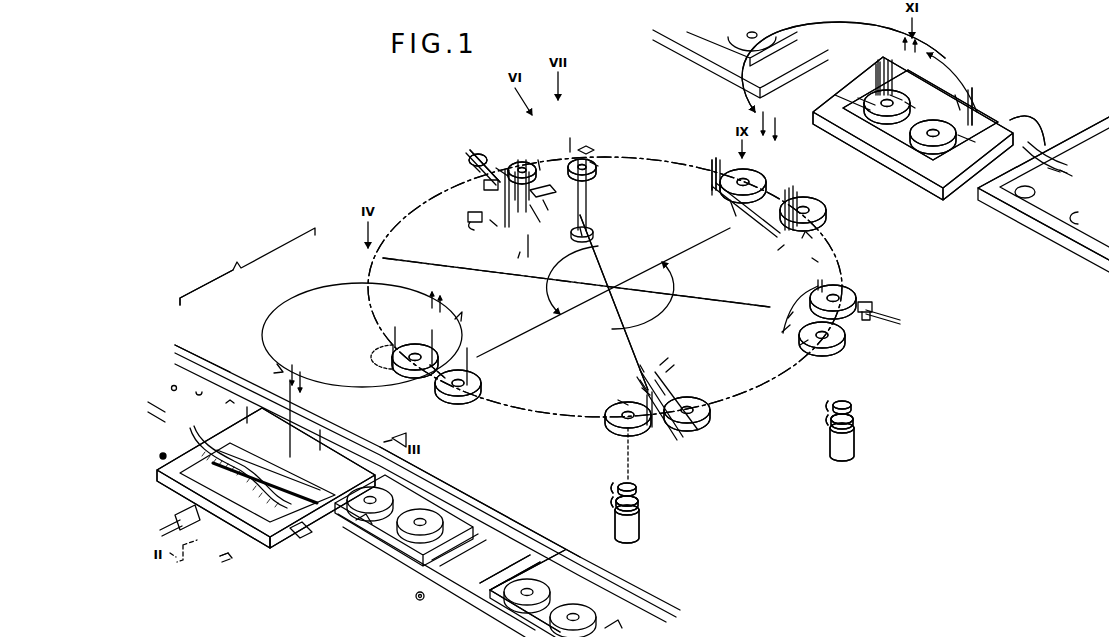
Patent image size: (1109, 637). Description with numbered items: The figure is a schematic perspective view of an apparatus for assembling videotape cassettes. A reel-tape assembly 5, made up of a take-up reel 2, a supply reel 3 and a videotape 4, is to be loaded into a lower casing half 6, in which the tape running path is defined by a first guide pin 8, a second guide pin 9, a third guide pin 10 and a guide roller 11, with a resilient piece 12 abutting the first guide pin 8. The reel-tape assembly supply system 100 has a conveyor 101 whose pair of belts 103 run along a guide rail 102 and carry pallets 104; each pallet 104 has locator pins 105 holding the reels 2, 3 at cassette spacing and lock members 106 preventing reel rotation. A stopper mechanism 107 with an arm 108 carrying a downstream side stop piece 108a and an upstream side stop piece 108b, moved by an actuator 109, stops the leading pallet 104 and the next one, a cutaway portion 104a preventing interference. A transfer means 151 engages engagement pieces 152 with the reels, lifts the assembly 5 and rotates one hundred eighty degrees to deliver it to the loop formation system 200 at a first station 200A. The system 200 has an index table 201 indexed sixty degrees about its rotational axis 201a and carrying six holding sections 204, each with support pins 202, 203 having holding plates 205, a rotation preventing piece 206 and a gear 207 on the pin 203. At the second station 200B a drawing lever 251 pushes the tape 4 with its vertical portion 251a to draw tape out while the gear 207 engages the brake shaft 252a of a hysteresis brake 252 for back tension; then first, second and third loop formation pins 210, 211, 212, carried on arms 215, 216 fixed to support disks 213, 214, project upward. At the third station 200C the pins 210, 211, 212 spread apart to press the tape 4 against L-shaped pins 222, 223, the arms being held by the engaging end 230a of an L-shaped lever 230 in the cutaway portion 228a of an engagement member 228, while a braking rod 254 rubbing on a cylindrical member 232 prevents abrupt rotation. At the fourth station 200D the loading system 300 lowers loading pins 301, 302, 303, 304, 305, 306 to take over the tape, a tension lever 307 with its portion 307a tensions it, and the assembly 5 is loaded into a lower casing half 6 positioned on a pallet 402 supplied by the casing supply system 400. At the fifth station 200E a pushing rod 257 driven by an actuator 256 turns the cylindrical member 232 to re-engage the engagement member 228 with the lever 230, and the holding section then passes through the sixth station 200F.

The take-up reel 2 is at (458, 398).
The supply reel 3 is at (393, 362).
The videotape 4 is at (442, 370).
The reel-tape assembly 5 is at (415, 392).
The lower casing half 6 is at (880, 140).
The first guide pin 8 is at (855, 98).
The second guide pin 9 is at (895, 92).
The third guide pin 10 is at (995, 115).
The guide roller 11 is at (968, 137).
The resilient piece 12 is at (912, 100).
The reel-tape assembly supply system 100 is at (236, 260).
The conveyor 101 is at (213, 352).
The guide rail 102 is at (516, 534).
The belts 103 is at (540, 550).
The pallet 104 is at (578, 585).
The cutaway portion 104a is at (172, 480).
The locator pins 105 is at (172, 386).
The lock members 106 is at (362, 532).
The stopper mechanism 107 is at (226, 550).
The arm 108 is at (262, 535).
The downstream side stop piece 108a is at (185, 450).
The upstream side stop piece 108b is at (300, 530).
The actuator 109 is at (175, 520).
The transfer means 151 is at (318, 283).
The engagement pieces 152 is at (395, 340).
The loop formation system 200 is at (406, 168).
The first station 200A is at (488, 372).
The second station 200B is at (684, 384).
The third station 200C is at (736, 295).
The fourth station 200D is at (673, 230).
The fifth station 200E is at (611, 205).
The sixth station 200F is at (398, 257).
The index table 201 is at (528, 256).
The rotational axis 201a is at (622, 270).
The support pin 202 is at (522, 158).
The support pin 203 is at (594, 155).
The holding section 204 is at (572, 135).
The holding plate 205 is at (508, 158).
The rotation preventing piece 206 is at (598, 160).
The gear 207 is at (594, 232).
The first loop formation pin 210 is at (537, 226).
The second loop formation pin 211 is at (546, 212).
The third loop formation pin 212 is at (580, 228).
The support disk 213 is at (502, 170).
The support disk 214 is at (560, 188).
The arm 215 is at (538, 160).
The arm 216 is at (550, 172).
The L-shaped pin 222 is at (708, 180).
The L-shaped pin 223 is at (812, 236).
The engagement member 228 is at (518, 258).
The cutaway portion 228a is at (505, 230).
The L-shaped lever 230 is at (468, 217).
The engaging end 230a is at (494, 226).
The cylindrical member 232 is at (480, 188).
The drawing lever 251 is at (692, 433).
The vertical portion 251a is at (640, 365).
The hysteresis brake 252 is at (642, 531).
The brake shaft 252a is at (640, 500).
The braking rod 254 is at (890, 322).
The actuator 256 is at (470, 150).
The pushing rod 257 is at (472, 168).
The loading system 300 is at (720, 98).
The loading pin 301 is at (712, 160).
The loading pin 302 is at (795, 186).
The loading pin 303 is at (795, 192).
The loading pin 304 is at (800, 198).
The loading pin 305 is at (718, 168).
The loading pin 306 is at (812, 214).
The tension lever 307 is at (760, 188).
The arm pivot 307a is at (730, 218).
The casing supply system 400 is at (1036, 108).
The pallet 402 is at (920, 180).